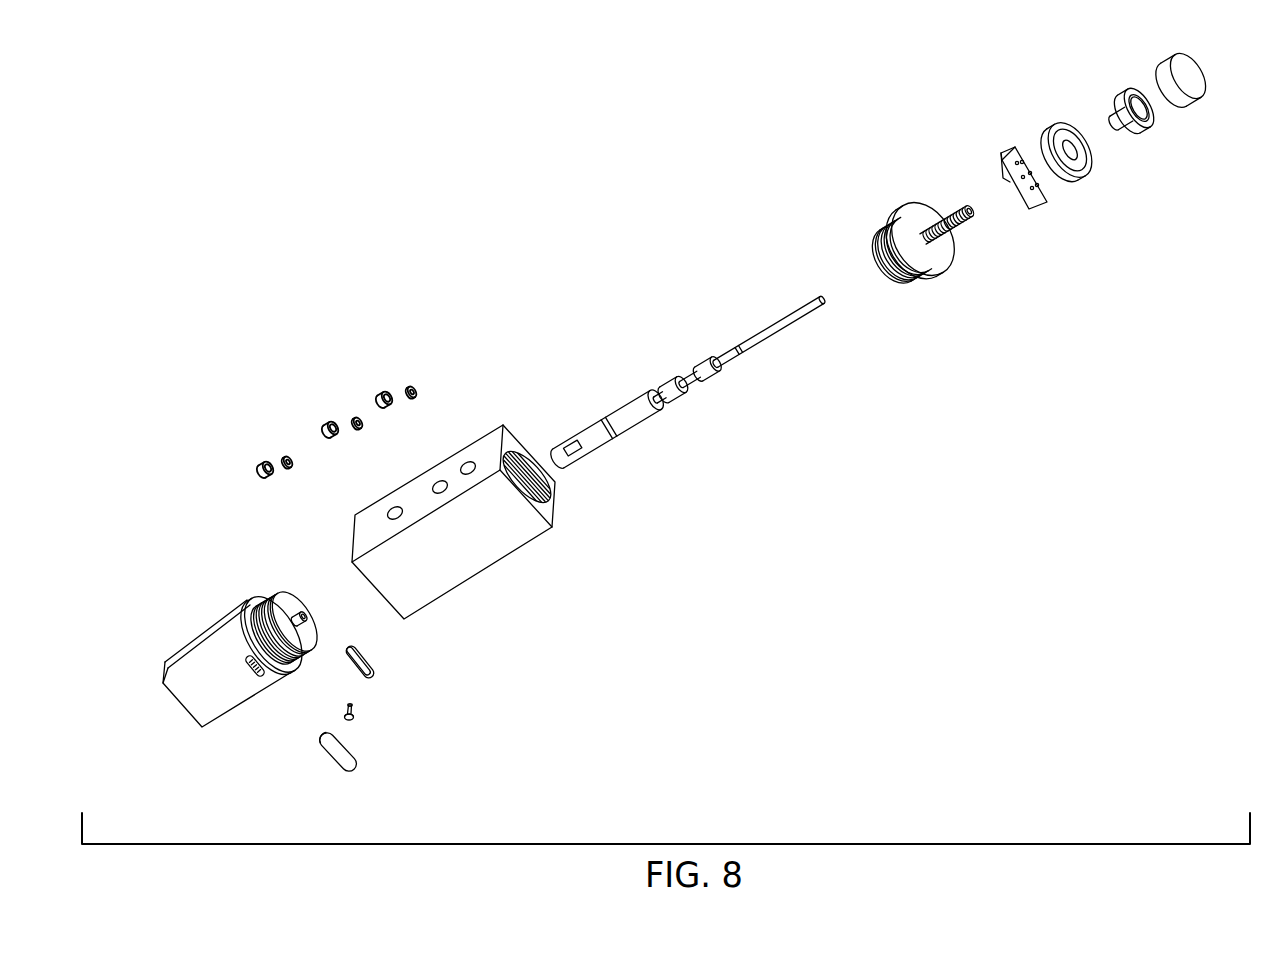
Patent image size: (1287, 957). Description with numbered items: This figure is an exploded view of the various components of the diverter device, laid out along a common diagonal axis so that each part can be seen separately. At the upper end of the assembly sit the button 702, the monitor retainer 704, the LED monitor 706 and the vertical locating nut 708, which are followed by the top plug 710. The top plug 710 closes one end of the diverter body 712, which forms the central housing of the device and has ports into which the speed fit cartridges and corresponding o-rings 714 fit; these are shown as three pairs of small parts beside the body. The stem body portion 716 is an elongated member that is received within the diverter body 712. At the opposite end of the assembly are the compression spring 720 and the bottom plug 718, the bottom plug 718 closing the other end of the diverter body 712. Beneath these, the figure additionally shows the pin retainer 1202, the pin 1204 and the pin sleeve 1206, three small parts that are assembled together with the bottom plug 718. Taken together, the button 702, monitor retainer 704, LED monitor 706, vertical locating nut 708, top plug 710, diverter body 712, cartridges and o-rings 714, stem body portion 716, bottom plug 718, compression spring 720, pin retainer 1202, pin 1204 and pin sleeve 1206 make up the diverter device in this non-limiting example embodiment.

The button 702 is at (1217, 90).
The monitor retainer 704 is at (1113, 87).
The LED monitor 706 is at (1148, 187).
The vertical locating nut 708 is at (997, 145).
The top plug 710 is at (890, 197).
The diverter body 712 is at (498, 582).
The speed fit cartridges and corresponding o-rings 714 is at (323, 418).
The stem body portion 716 is at (750, 368).
The bottom plug 718 is at (162, 700).
The compression spring 720 is at (302, 590).
The pin retainer 1202 is at (357, 775).
The pin 1204 is at (362, 727).
The pin sleeve 1206 is at (380, 680).